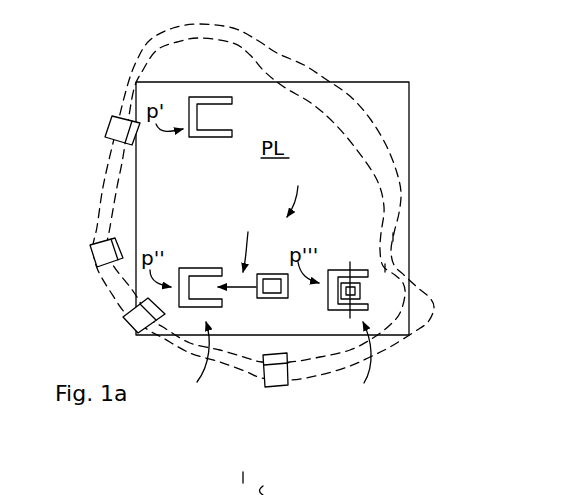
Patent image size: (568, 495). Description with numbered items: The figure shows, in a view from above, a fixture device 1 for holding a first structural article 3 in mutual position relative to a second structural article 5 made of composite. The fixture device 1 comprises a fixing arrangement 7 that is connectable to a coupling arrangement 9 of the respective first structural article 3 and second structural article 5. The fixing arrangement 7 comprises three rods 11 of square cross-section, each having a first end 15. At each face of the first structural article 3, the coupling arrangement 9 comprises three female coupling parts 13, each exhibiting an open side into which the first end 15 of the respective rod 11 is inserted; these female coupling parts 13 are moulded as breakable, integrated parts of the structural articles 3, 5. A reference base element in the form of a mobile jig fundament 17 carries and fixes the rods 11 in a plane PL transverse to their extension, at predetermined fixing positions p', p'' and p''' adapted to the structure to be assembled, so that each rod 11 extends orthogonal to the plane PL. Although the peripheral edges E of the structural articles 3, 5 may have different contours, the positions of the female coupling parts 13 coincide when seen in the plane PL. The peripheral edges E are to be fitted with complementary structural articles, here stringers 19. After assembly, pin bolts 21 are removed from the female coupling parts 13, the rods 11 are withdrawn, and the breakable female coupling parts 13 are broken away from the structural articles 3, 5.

The fixture device 1 is at (77, 207).
The first structural article 3 is at (263, 70).
The second structural article 5 is at (302, 66).
The fixing arrangement 7 is at (300, 190).
The coupling arrangement 9 is at (280, 367).
The rod 11 is at (266, 299).
The female coupling part 13 is at (207, 138).
The first end 15 is at (251, 237).
The mobile jig fundament 17 is at (409, 132).
The stringer 19 is at (110, 124).
The pin bolt 21 is at (350, 263).
The peripheral edge E is at (393, 237).